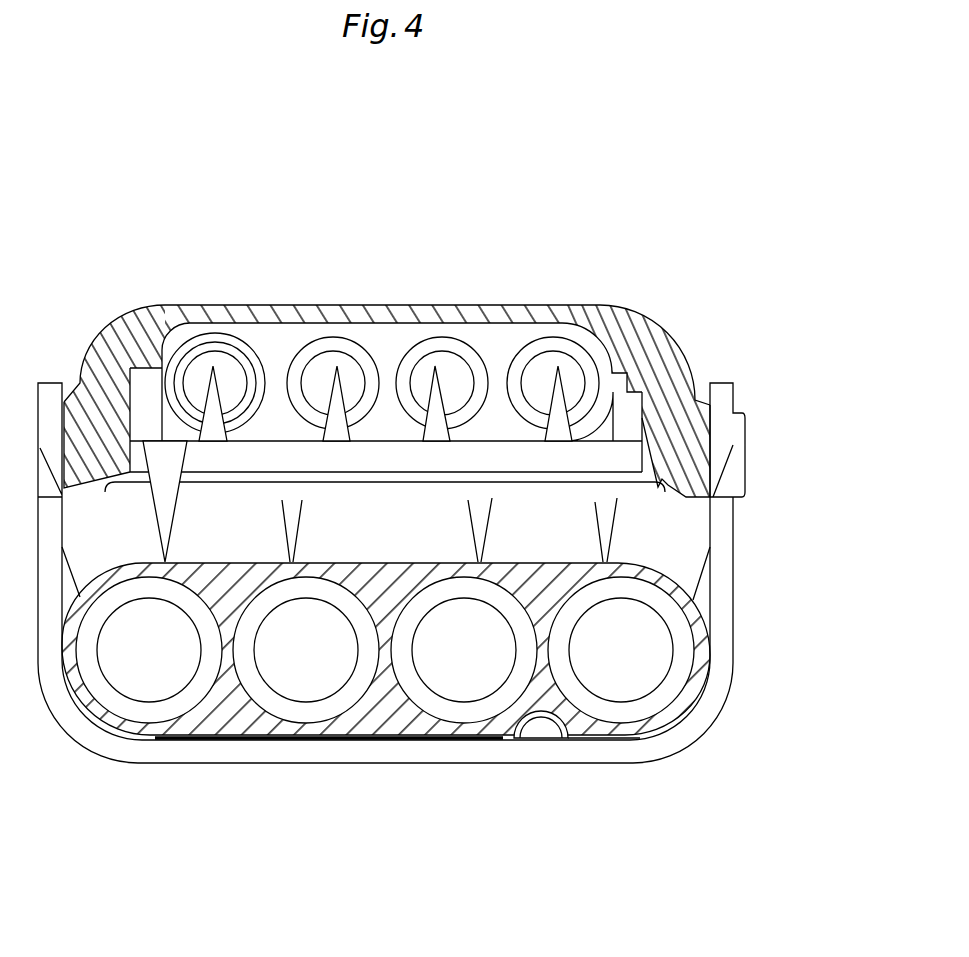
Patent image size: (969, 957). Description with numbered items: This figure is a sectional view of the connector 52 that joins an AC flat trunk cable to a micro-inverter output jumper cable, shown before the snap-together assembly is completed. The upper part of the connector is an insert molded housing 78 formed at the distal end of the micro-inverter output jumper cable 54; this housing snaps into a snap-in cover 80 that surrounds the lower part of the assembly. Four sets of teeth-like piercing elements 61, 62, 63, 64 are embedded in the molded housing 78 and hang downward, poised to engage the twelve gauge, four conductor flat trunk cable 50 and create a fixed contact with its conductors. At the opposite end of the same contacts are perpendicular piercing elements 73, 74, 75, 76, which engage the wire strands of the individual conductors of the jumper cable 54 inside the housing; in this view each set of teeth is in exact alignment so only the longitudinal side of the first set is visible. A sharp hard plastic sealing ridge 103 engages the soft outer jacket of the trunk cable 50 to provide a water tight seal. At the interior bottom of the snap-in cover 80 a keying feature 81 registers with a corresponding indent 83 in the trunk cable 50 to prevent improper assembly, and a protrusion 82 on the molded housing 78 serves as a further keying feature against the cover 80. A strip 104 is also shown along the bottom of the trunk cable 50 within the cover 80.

The connector 52 is at (570, 280).
The micro-inverter output jumper cable 54 is at (591, 323).
The insert molded housing 78 is at (700, 355).
The protrusion 82 is at (746, 457).
The snap-in cover 80 is at (745, 580).
The perpendicular piercing element 73 is at (198, 385).
The perpendicular piercing element 74 is at (322, 374).
The perpendicular piercing element 75 is at (423, 363).
The perpendicular piercing element 76 is at (546, 370).
The teeth-like piercing element 61 is at (192, 520).
The teeth-like piercing element 62 is at (312, 522).
The teeth-like piercing element 63 is at (502, 525).
The teeth-like piercing element 64 is at (625, 527).
The sealing ridge 103 is at (114, 509).
The flat trunk cable 50 is at (196, 738).
The bonding strip 104 is at (351, 750).
The indent 83 is at (525, 745).
The keying feature 81 is at (552, 749).